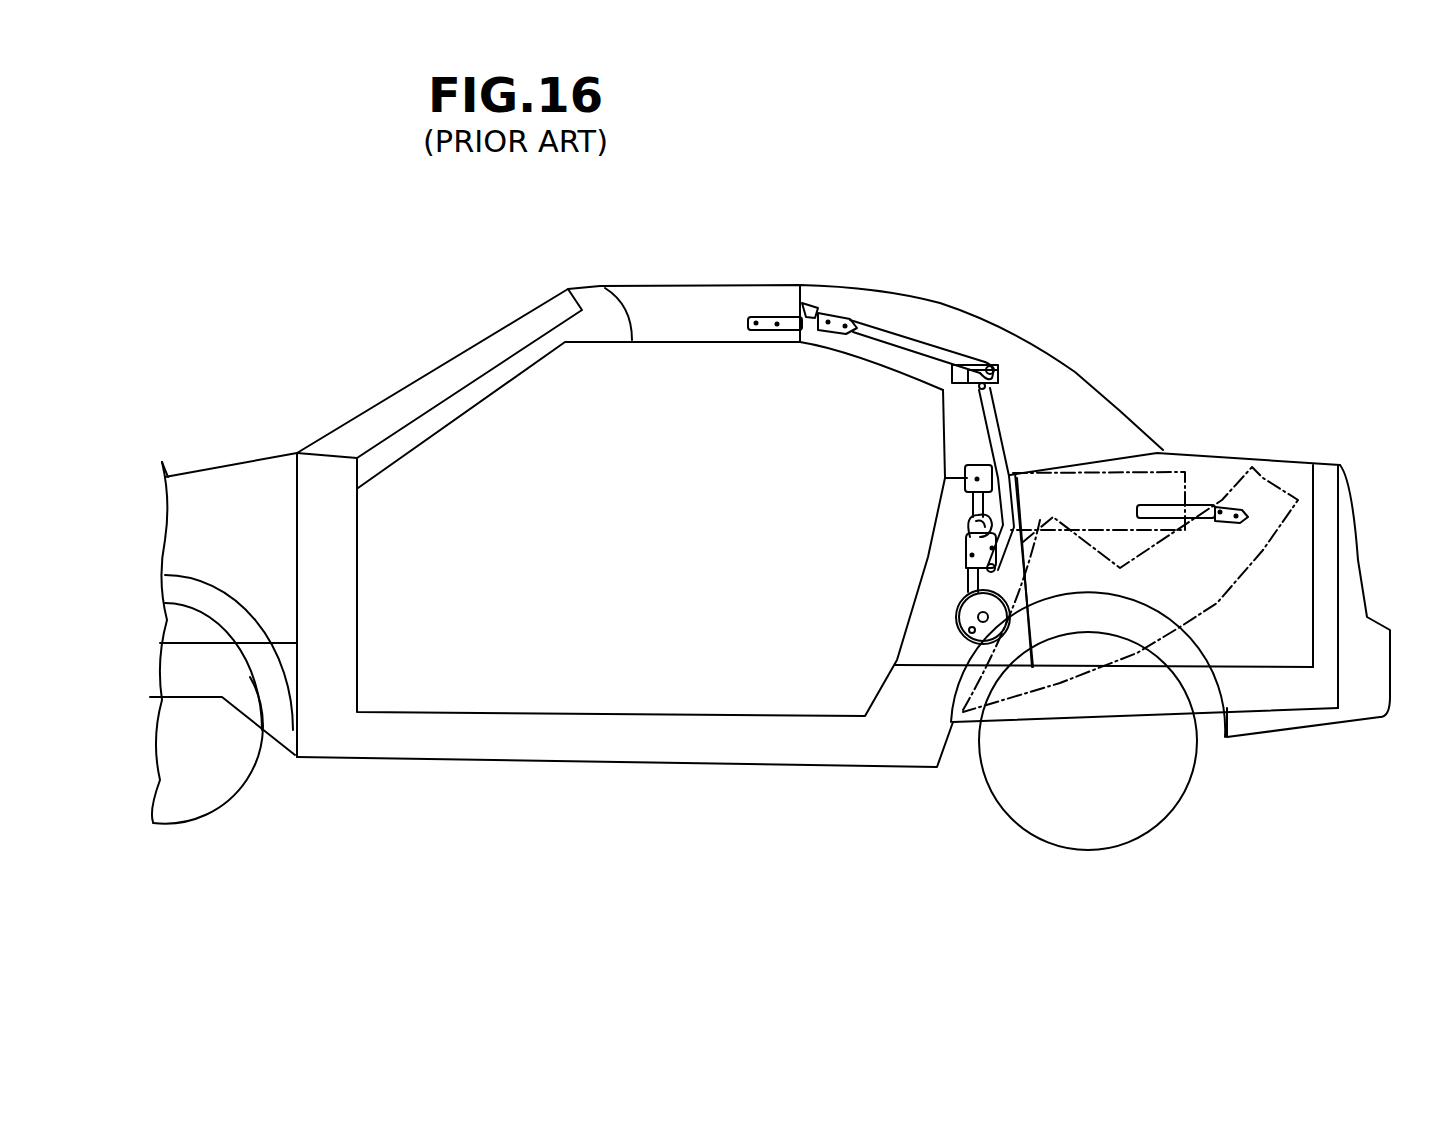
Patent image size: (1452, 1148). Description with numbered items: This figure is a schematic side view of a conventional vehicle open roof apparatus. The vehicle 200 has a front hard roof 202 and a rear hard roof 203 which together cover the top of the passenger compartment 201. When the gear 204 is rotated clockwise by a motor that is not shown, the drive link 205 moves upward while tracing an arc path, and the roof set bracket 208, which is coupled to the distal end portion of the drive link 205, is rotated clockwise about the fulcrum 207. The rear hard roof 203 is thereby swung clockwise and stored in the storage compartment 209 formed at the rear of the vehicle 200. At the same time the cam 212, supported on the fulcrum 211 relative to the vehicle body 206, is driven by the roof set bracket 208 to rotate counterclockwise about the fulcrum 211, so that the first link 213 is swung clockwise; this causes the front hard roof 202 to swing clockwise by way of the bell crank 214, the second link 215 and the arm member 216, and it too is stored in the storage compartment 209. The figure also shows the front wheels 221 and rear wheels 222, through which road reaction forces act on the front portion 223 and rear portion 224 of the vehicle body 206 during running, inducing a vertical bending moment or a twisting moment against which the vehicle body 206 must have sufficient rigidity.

The vehicle 200 is at (289, 260).
The passenger compartment 201 is at (494, 464).
The front hard roof 202 is at (672, 298).
The rear hard roof 203 is at (827, 293).
The gear 204 is at (958, 625).
The drive link 205 is at (967, 575).
The vehicle body 206 is at (698, 760).
The fulcrum 207 is at (983, 500).
The roof set bracket 208 is at (962, 481).
The storage compartment 209 is at (1293, 573).
The fulcrum 211 is at (1005, 588).
The cam 212 is at (970, 530).
The first link 213 is at (997, 413).
The bell crank 214 is at (998, 385).
The second link 215 is at (928, 347).
The arm member 216 is at (848, 308).
The front wheels 221 is at (193, 803).
The rear wheels 222 is at (1163, 820).
The front portion 223 is at (207, 693).
The rear portion 224 is at (1072, 712).